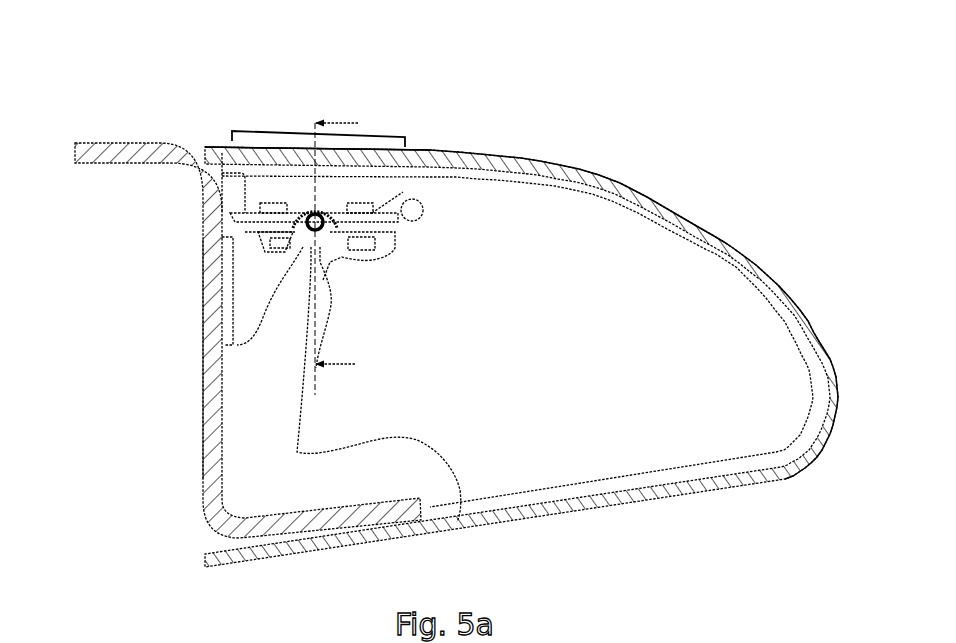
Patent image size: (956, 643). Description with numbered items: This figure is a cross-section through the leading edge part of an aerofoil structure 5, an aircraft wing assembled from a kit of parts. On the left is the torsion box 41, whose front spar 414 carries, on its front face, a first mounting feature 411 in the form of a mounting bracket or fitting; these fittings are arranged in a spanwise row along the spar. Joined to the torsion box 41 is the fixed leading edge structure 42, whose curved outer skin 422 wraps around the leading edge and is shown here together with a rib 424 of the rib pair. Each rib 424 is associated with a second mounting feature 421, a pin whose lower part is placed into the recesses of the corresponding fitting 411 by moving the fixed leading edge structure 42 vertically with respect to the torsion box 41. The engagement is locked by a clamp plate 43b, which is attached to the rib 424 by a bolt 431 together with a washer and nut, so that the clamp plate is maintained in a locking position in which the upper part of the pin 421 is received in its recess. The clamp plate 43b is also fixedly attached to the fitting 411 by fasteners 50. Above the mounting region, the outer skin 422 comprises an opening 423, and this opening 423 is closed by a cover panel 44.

The aerofoil structure 5 is at (652, 96).
The torsion box 41 is at (103, 140).
The first mounting feature 411 is at (232, 306).
The front spar 414 is at (203, 284).
The fixed leading edge structure 42 is at (667, 173).
The second mounting feature 421 is at (315, 222).
The outer skin 422 is at (734, 238).
The opening 423 is at (315, 130).
The rib 424 is at (644, 442).
The clamp plate 43b is at (231, 207).
The bolt 431 is at (419, 194).
The cover panel 44 is at (373, 145).
The fastener 50 is at (268, 240).